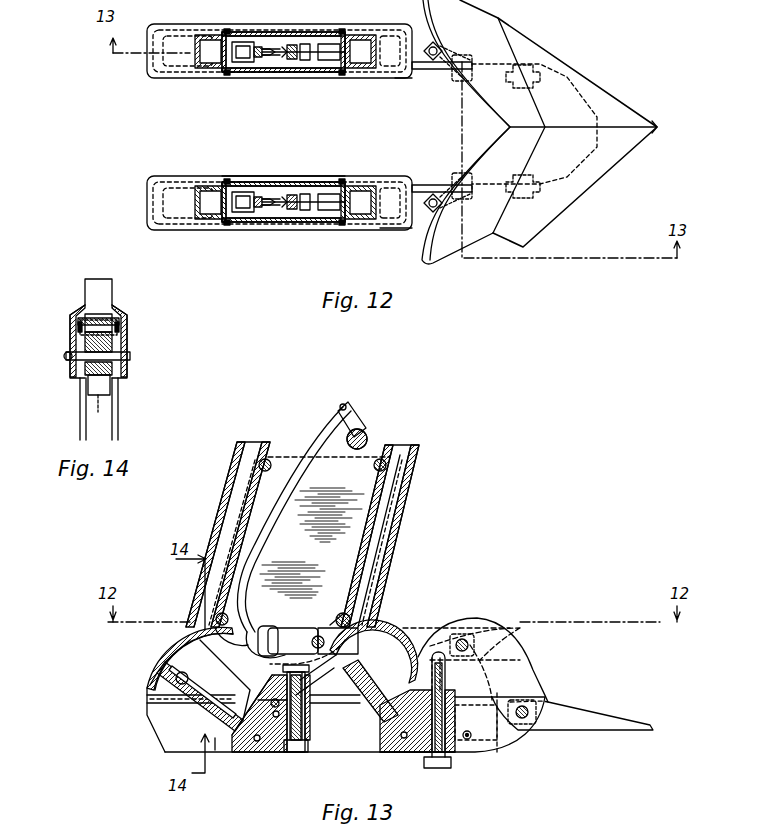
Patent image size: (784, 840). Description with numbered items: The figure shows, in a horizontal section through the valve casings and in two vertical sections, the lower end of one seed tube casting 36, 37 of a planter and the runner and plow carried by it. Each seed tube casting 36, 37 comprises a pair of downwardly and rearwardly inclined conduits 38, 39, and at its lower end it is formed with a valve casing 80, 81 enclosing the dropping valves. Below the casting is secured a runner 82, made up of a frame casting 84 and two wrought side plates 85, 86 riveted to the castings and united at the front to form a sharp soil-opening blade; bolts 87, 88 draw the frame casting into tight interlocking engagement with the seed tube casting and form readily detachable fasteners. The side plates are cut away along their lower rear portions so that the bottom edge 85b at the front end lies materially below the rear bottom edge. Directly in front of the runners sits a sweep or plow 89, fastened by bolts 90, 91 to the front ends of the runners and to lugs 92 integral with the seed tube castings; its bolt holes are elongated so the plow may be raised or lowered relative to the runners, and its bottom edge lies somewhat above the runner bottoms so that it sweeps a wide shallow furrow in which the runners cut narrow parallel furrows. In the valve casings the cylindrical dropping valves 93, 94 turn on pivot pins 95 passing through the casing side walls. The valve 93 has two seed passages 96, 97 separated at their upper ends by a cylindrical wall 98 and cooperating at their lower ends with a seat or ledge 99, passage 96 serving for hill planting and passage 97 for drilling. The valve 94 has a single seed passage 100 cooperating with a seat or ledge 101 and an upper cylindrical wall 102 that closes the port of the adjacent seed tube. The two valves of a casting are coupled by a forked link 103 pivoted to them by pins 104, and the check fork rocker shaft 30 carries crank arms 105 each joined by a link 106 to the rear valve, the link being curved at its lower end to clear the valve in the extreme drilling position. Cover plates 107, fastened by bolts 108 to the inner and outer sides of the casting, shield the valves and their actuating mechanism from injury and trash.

In FIG. 13, the check fork rocker shaft 30 is at (367, 440).
In FIG. 12, the seed tube casting 36 is at (340, 175).
In FIG. 12, the seed tube casting 37 is at (395, 78).
In FIG. 13, the seed tube casting 37 is at (416, 490).
In FIG. 12, the conduit 38 is at (213, 172).
In FIG. 14, the conduit 38 is at (98, 288).
In FIG. 13, the conduit 38 is at (222, 519).
In FIG. 12, the conduit 39 is at (362, 190).
In FIG. 13, the conduit 39 is at (392, 519).
In FIG. 12, the valve casing 80 is at (150, 199).
In FIG. 13, the valve casing 80 is at (148, 660).
In FIG. 12, the valve casing 81 is at (400, 228).
In FIG. 13, the valve casing 81 is at (395, 630).
In FIG. 13, the runner 82 is at (146, 711).
In FIG. 13, the frame casting 84 is at (262, 752).
In FIG. 14, the side plate 85 is at (118, 411).
In FIG. 13, the side plate 85 is at (165, 729).
In FIG. 13, the horizontal bottom edge 85b is at (428, 770).
In FIG. 14, the side plate 86 is at (78, 407).
In FIG. 13, the side plate 86 is at (483, 758).
In FIG. 12, the bolt 87 is at (436, 190).
In FIG. 13, the bolt 87 is at (437, 768).
In FIG. 12, the bolt 88 is at (305, 190).
In FIG. 13, the bolt 88 is at (300, 752).
In FIG. 12, the sweep or plow 89 is at (638, 118).
In FIG. 13, the sweep or plow 89 is at (560, 699).
In FIG. 12, the bolt 90 is at (523, 198).
In FIG. 13, the bolt 90 is at (532, 722).
In FIG. 12, the bolt 91 is at (466, 200).
In FIG. 13, the bolt 91 is at (468, 632).
In FIG. 12, the lug 92 is at (410, 178).
In FIG. 14, the dropping valve 93 is at (99, 398).
In FIG. 13, the dropping valve 93 is at (147, 696).
In FIG. 13, the dropping valve 94 is at (334, 704).
In FIG. 14, the pivot pin 95 is at (130, 356).
In FIG. 13, the pivot pin 95 is at (375, 664).
In FIG. 14, the seed passage 96 is at (124, 312).
In FIG. 13, the seed passage 96 is at (222, 714).
In FIG. 14, the seed passage 97 is at (110, 384).
In FIG. 13, the seed passage 97 is at (200, 699).
In FIG. 13, the cylindrical wall 98 is at (158, 650).
In FIG. 13, the seat or ledge 99 is at (208, 724).
In FIG. 13, the seed passage 100 is at (365, 699).
In FIG. 13, the seat or ledge 101 is at (390, 724).
In FIG. 13, the cylindrical wall 102 is at (314, 646).
In FIG. 12, the forked link 103 is at (300, 212).
In FIG. 14, the forked link 103 is at (78, 320).
In FIG. 13, the forked link 103 is at (326, 640).
In FIG. 14, the pin 104 is at (118, 326).
In FIG. 13, the pin 104 is at (342, 615).
In FIG. 13, the crank arm 105 is at (352, 418).
In FIG. 12, the link 106 is at (255, 190).
In FIG. 13, the link 106 is at (268, 547).
In FIG. 12, the cover plate 107 is at (280, 230).
In FIG. 14, the cover plate 107 is at (74, 339).
In FIG. 13, the cover plate 107 is at (292, 462).
In FIG. 12, the bolt 108 is at (342, 222).
In FIG. 13, the bolt 108 is at (266, 472).